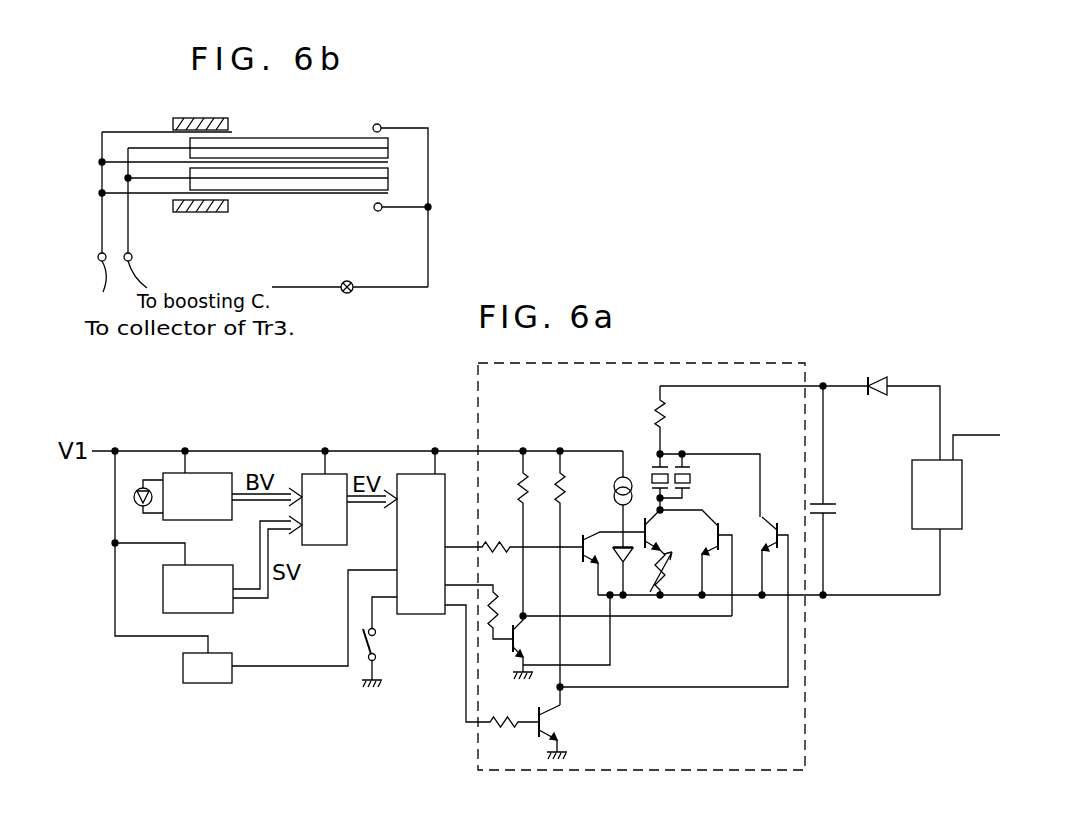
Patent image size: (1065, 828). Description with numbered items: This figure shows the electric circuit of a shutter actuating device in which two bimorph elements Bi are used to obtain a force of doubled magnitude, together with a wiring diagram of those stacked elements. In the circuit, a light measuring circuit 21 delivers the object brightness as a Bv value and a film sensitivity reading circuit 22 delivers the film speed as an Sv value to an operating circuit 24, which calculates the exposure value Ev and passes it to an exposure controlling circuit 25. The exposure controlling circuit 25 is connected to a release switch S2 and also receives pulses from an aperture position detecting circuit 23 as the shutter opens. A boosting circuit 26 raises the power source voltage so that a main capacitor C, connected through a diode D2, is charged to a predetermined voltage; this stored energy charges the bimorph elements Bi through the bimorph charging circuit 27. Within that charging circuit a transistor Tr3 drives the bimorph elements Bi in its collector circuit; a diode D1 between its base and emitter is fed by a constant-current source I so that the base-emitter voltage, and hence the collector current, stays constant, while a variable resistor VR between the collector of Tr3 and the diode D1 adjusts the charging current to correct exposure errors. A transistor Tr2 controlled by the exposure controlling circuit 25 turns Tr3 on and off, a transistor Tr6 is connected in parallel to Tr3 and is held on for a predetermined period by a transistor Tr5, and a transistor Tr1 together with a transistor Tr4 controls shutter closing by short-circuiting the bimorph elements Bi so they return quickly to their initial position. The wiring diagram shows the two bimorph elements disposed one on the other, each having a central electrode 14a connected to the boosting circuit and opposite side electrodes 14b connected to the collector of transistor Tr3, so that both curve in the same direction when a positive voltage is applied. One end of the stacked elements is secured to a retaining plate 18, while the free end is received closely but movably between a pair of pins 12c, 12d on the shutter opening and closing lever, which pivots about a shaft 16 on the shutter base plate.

In FIG. 6b, the retaining plate 18 is at (180, 118).
In FIG. 6b, the central electrode 14a is at (190, 175).
In FIG. 6b, the opposite side electrodes 14b is at (223, 193).
In FIG. 6b, the pin 12c is at (380, 124).
In FIG. 6b, the pin 12d is at (375, 210).
In FIG. 6b, the shaft 16 is at (347, 293).
In FIG. 6a, the light measuring circuit 21 is at (178, 473).
In FIG. 6a, the film sensitivity reading circuit 22 is at (170, 613).
In FIG. 6a, the aperture position detecting circuit 23 is at (205, 683).
In FIG. 6a, the operating circuit 24 is at (306, 474).
In FIG. 6a, the exposure controlling circuit 25 is at (418, 474).
In FIG. 6a, the boosting circuit 26 is at (963, 512).
In FIG. 6a, the bimorph charging circuit 27 is at (808, 703).
In FIG. 6a, the transistor Tr1 is at (562, 727).
In FIG. 6a, the transistor Tr2 is at (605, 549).
In FIG. 6a, the transistor Tr3 is at (648, 532).
In FIG. 6a, the transistor Tr4 is at (775, 517).
In FIG. 6a, the transistor Tr5 is at (513, 656).
In FIG. 6a, the transistor Tr6 is at (719, 509).
In FIG. 6a, the diode D1 is at (632, 565).
In FIG. 6a, the diode D2 is at (878, 375).
In FIG. 6a, the variable resistor VR is at (667, 576).
In FIG. 6a, the main capacitor C is at (838, 509).
In FIG. 6a, the bimorph element Bi is at (651, 466).
In FIG. 6a, the constant-current source I is at (612, 485).
In FIG. 6a, the switch S2 is at (378, 640).